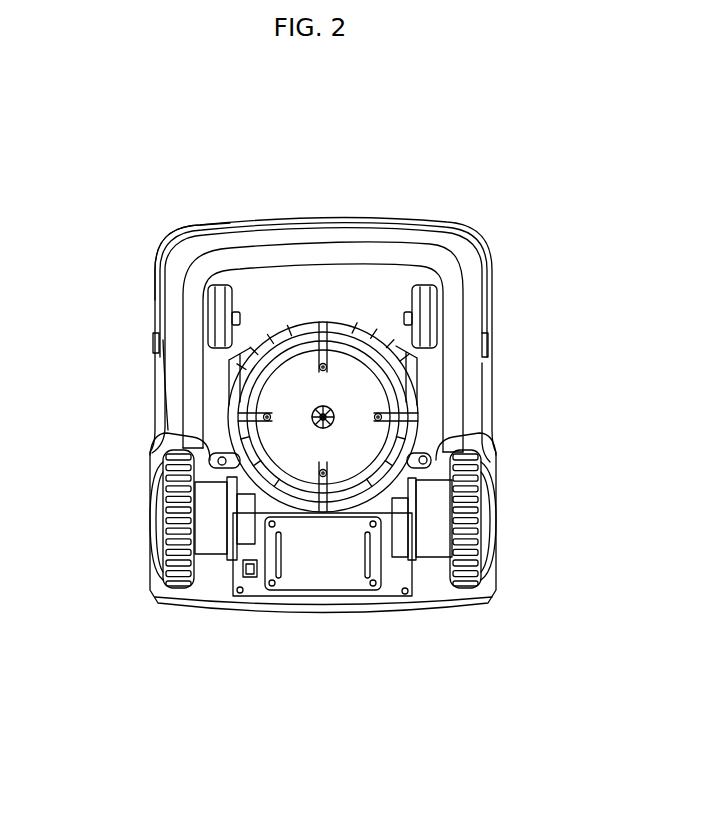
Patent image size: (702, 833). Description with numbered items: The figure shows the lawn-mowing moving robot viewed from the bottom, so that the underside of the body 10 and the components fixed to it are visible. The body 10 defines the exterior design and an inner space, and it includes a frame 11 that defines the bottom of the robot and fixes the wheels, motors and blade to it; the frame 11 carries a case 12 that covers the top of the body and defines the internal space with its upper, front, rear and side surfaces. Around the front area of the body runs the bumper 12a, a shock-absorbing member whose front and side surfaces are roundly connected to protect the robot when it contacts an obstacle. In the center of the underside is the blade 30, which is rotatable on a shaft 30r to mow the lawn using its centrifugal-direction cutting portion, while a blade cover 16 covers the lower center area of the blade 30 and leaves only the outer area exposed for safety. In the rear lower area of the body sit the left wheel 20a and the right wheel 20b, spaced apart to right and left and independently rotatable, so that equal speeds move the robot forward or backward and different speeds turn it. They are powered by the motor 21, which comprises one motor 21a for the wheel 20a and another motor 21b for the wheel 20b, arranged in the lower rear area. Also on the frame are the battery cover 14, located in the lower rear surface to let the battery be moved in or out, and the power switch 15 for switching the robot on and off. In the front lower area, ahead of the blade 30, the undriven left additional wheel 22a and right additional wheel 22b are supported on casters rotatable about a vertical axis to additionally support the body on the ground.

The body 10 is at (83, 342).
The frame 11 is at (218, 352).
The case 12 is at (203, 370).
The bumper 12a is at (192, 230).
The battery cover 14 is at (250, 558).
The power switch 15 is at (167, 437).
The blade cover 16 is at (226, 396).
The left wheel 20a is at (477, 538).
The right wheel 20b is at (173, 543).
The motor 21 is at (322, 613).
The motor 21a is at (370, 580).
The motor 21b is at (276, 580).
The left additional wheel 22a is at (425, 307).
The right additional wheel 22b is at (220, 307).
The blade 30 is at (387, 382).
The shaft 30r is at (335, 417).